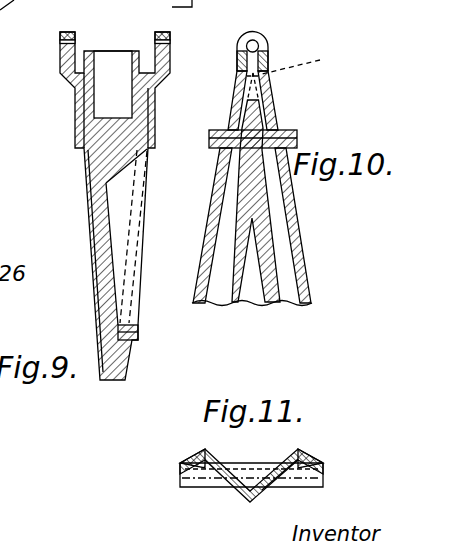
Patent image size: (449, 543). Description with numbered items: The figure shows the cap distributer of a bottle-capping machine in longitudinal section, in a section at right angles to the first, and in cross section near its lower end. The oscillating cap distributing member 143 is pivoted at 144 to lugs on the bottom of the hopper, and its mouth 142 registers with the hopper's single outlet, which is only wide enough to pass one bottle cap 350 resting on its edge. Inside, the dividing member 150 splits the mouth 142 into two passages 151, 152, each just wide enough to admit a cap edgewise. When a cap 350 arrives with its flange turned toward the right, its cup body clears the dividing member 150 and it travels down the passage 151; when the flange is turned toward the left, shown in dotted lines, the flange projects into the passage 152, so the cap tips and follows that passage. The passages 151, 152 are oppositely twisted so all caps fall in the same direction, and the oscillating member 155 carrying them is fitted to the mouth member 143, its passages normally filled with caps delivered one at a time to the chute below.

In FIG. 9, the mouth 142 is at (116, 62).
In FIG. 10, the mouth 142 is at (262, 42).
In FIG. 9, the oscillating cap distributing member 143 is at (75, 84).
In FIG. 10, the oscillating cap distributing member 143 is at (243, 76).
In FIG. 9, the pivot 144 is at (61, 34).
In FIG. 9, the dividing member 150 is at (116, 118).
In FIG. 10, the dividing member 150 is at (250, 124).
In FIG. 10, the passage 151 is at (275, 202).
In FIG. 11, the passage 151 is at (288, 468).
In FIG. 10, the passage 152 is at (230, 183).
In FIG. 11, the passage 152 is at (217, 462).
In FIG. 10, the oscillating member 155 is at (203, 256).
In FIG. 11, the oscillating member 155 is at (187, 460).
In FIG. 10, the bottle cap 350 is at (311, 59).